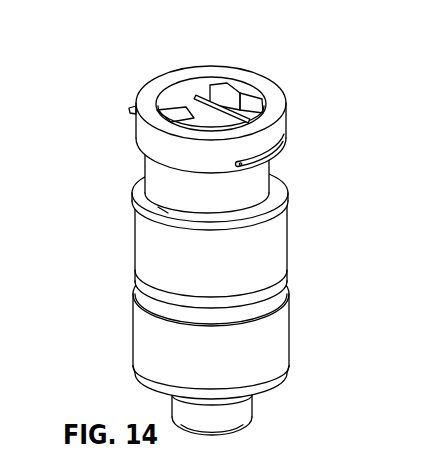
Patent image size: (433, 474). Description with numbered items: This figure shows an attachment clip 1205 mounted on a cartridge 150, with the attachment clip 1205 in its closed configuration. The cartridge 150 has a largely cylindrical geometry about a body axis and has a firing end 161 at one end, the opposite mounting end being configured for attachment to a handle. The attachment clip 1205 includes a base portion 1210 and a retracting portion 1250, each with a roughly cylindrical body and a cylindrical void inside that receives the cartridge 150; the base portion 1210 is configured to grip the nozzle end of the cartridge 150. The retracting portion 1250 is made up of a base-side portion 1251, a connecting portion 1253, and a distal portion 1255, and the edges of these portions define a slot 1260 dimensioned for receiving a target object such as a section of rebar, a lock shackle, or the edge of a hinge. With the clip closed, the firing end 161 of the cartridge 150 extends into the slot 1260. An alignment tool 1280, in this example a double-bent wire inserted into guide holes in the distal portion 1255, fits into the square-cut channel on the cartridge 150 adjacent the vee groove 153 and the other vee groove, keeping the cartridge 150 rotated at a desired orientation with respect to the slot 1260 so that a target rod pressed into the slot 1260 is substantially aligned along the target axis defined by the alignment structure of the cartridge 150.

The attachment clip 1205 is at (106, 343).
The distal portion 1255 is at (211, 107).
The firing end 161 is at (182, 86).
The vee groove 153 is at (238, 108).
The alignment tool 1280 is at (284, 147).
The connecting portion 1253 is at (213, 194).
The slot 1260 is at (266, 181).
The cartridge 150 is at (200, 192).
The base-side portion 1251 is at (134, 248).
The retracting portion 1250 is at (230, 240).
The base portion 1210 is at (277, 338).